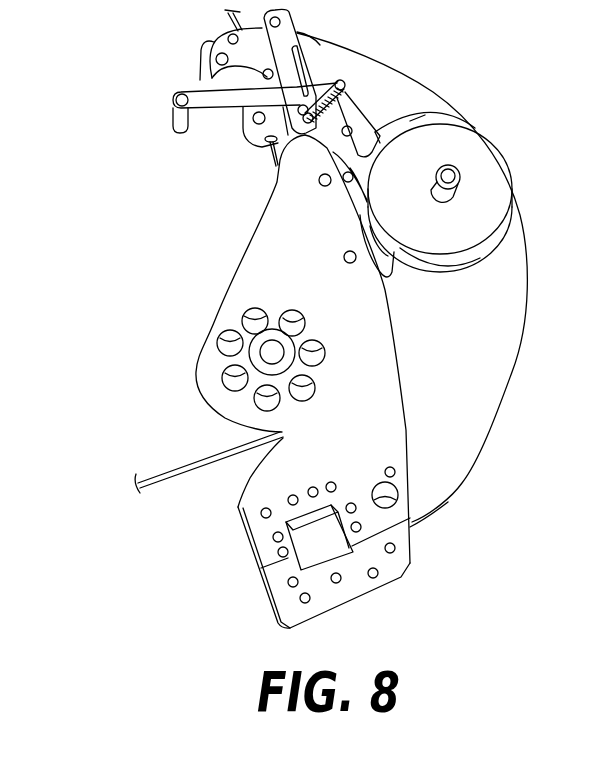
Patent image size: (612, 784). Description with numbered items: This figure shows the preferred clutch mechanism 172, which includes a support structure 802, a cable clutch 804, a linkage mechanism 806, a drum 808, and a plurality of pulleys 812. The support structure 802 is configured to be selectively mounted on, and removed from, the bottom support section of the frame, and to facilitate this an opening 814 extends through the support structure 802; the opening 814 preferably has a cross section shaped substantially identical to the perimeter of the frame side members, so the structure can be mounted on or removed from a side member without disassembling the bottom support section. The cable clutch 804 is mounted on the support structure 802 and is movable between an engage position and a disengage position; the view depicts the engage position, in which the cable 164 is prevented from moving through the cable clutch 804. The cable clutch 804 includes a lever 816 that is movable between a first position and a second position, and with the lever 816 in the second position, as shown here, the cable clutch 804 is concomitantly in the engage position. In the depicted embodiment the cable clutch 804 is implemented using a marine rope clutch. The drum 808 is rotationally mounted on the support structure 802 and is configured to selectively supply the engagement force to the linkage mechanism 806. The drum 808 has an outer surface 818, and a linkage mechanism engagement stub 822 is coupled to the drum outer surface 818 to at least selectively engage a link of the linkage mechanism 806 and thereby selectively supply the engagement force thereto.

The clutch mechanism 172 is at (119, 181).
The support structure 802 is at (390, 72).
The cable clutch 804 is at (212, 39).
The linkage mechanism 806 is at (379, 105).
The drum 808 is at (498, 196).
The pulleys 812 is at (343, 197).
The opening 814 is at (346, 496).
The lever 816 is at (237, 131).
The drum outer surface 818 is at (480, 258).
The linkage mechanism engagement stub 822 is at (475, 126).
The cable 164 is at (158, 472).